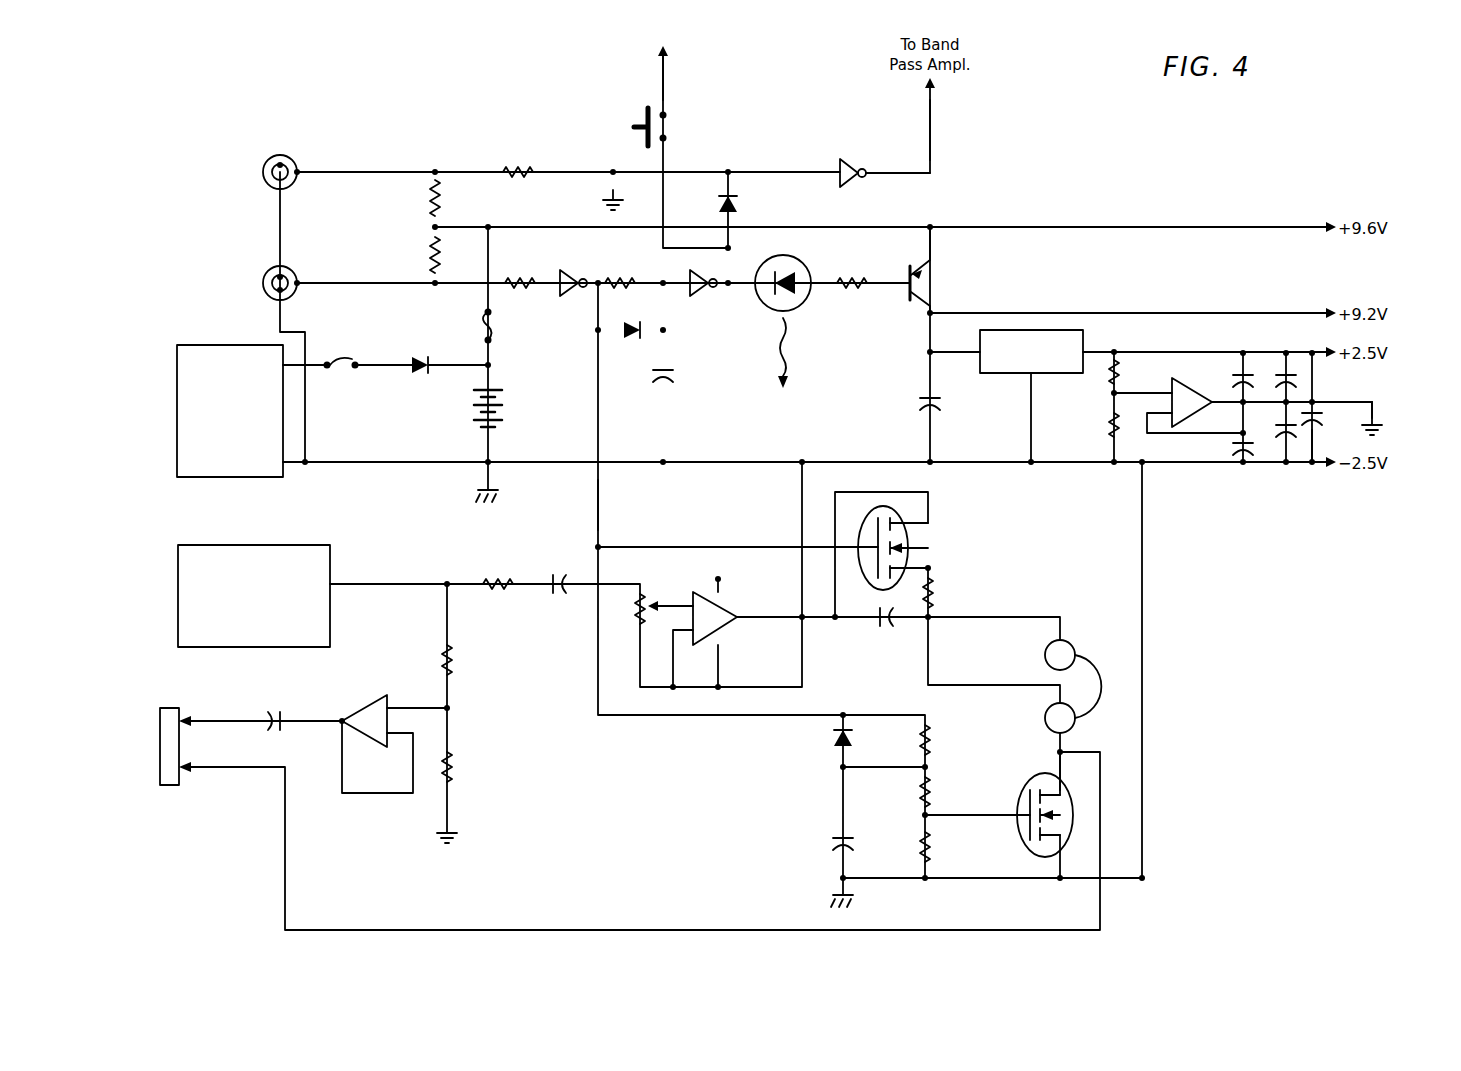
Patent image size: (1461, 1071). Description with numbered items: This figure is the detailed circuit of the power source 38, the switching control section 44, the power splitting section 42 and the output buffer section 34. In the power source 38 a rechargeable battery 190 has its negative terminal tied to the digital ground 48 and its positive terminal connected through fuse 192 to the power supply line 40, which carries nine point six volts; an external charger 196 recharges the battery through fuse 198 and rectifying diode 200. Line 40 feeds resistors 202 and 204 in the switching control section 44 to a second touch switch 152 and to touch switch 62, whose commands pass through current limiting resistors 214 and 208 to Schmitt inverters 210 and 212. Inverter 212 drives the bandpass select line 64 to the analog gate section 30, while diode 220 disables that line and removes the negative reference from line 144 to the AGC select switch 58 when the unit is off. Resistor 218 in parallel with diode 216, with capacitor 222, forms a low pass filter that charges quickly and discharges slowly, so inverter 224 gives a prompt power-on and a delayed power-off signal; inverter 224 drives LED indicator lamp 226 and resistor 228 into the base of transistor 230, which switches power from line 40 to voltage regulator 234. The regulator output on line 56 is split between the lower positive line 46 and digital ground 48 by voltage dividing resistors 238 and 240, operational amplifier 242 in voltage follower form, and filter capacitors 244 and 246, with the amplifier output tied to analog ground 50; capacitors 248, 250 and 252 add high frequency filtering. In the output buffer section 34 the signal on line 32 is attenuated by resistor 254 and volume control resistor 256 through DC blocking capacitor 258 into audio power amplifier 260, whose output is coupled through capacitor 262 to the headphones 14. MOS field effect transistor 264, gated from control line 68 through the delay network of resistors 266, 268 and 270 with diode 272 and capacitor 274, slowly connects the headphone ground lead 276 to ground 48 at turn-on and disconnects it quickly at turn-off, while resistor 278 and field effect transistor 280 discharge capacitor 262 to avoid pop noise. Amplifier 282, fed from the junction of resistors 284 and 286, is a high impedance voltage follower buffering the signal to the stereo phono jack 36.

The earphone speakers 14 is at (1061, 602).
The analog gate section 30 is at (255, 545).
The analog signal line 32 is at (370, 588).
The output buffer section 34 is at (755, 778).
The stereo phono jack 36 is at (170, 788).
The power source 38 is at (455, 476).
The power supply line 40 is at (985, 227).
The power splitting section 42 is at (1305, 488).
The switching control section 44 is at (950, 190).
The lower positive dc voltage line 46 is at (1156, 351).
The digital ground 48 is at (706, 470).
The analog ground 50 is at (1346, 402).
The regulator output line 56 is at (1101, 312).
The AGC select switch 58 is at (645, 122).
The touch switch 62 is at (265, 160).
The bandpass select line 64 is at (932, 130).
The control line 68 is at (600, 503).
The AGC select line 144 is at (665, 96).
The charging jack 152 is at (266, 273).
The battery 190 is at (496, 400).
The fuse 192 is at (484, 325).
The external charger 196 is at (220, 345).
The fuse 198 is at (341, 356).
The rectifying diode 200 is at (421, 376).
The resistor 202 is at (428, 254).
The resistor 204 is at (430, 194).
The current limiting resistor 208 is at (518, 166).
The Schmitt inverter 210 is at (565, 281).
The Schmitt inverter 212 is at (849, 160).
The current limiting resistor 214 is at (526, 290).
The diode 216 is at (633, 340).
The resistor 218 is at (610, 292).
The diode 220 is at (740, 203).
The capacitor 222 is at (676, 378).
The inverter 224 is at (712, 294).
The LED indicator lamp 226 is at (798, 305).
The resistor 228 is at (858, 292).
The transistor 230 is at (925, 287).
The voltage regulator 234 is at (1000, 374).
The voltage dividing resistor 238 is at (1108, 382).
The voltage dividing resistor 240 is at (1105, 430).
The operational amplifier 242 is at (1197, 418).
The filter capacitor 244 is at (1233, 377).
The filter capacitor 246 is at (1236, 458).
The filter capacitor 248 is at (1277, 372).
The filter capacitor 250 is at (1280, 440).
The filter capacitor 252 is at (1320, 422).
The resistor 254 is at (488, 580).
The adjustable volume control resistor 256 is at (636, 607).
The DC blocking capacitor 258 is at (556, 572).
The low voltage audio power amplifier 260 is at (723, 621).
The capacitor 262 is at (883, 630).
The MOS field effect transistor 264 is at (1082, 806).
The resistor 266 is at (935, 738).
The resistor 268 is at (938, 784).
The resistor 270 is at (938, 852).
The diode 272 is at (833, 738).
The capacitor 274 is at (832, 845).
The headphone ground lead 276 is at (1057, 766).
The resistor 278 is at (936, 592).
The field effect transistor 280 is at (915, 540).
The amplifier 282 is at (360, 700).
The resistor 284 is at (283, 712).
The resistor 286 is at (190, 722).